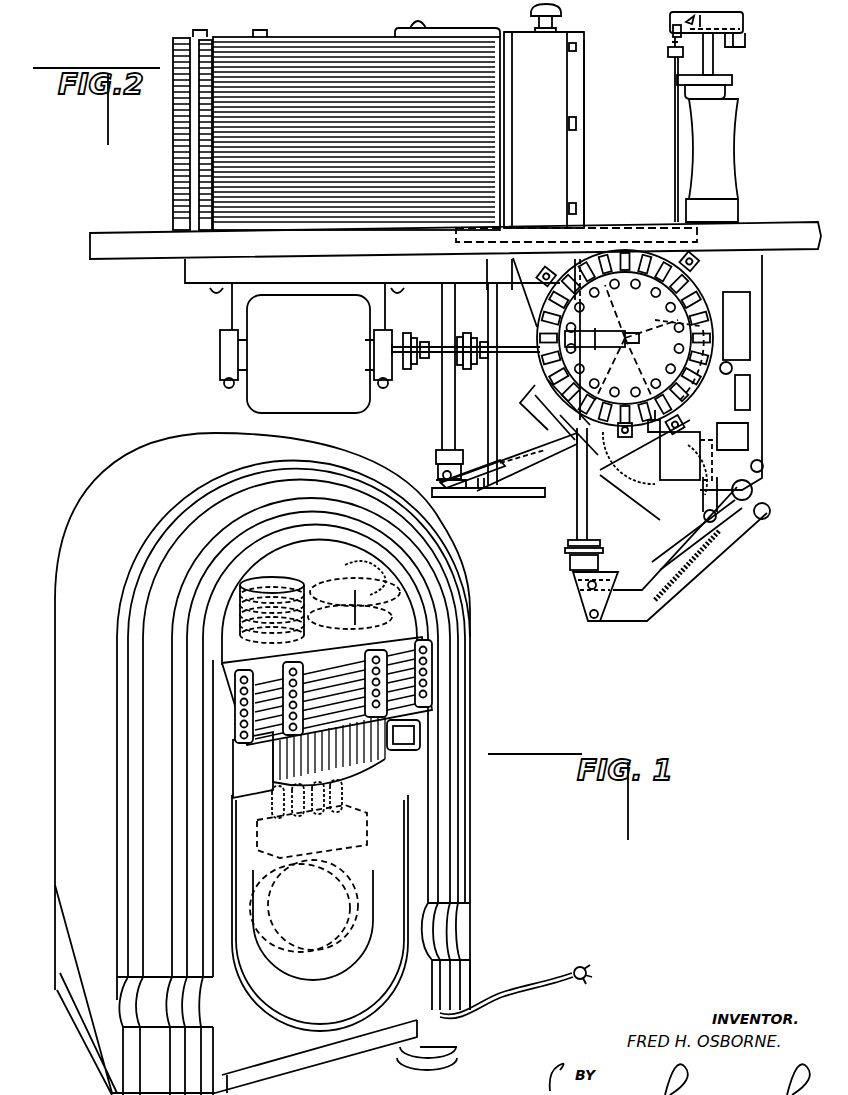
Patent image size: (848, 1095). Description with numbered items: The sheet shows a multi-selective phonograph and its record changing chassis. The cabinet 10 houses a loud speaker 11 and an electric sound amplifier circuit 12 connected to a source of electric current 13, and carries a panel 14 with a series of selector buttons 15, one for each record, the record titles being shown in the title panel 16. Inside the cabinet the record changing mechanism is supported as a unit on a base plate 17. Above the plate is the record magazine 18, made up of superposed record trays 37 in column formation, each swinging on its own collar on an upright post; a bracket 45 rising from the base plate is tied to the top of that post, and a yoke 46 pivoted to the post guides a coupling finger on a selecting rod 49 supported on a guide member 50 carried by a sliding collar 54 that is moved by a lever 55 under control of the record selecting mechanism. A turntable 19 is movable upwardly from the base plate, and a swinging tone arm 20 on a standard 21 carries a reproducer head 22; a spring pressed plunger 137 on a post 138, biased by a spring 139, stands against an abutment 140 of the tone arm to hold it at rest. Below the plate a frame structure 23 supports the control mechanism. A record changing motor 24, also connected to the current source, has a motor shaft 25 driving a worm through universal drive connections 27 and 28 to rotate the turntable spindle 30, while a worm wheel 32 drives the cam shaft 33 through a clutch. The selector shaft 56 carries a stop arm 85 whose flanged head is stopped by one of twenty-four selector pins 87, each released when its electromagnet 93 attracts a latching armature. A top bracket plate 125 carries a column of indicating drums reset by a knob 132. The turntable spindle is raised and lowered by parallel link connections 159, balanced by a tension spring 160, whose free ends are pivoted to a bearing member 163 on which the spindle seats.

In FIG. 1, the cabinet 10 is at (450, 560).
In FIG. 1, the loud speaker 11 is at (466, 852).
In FIG. 1, the electric sound amplifier circuit 12 is at (470, 740).
In FIG. 1, the source of electric current 13 is at (588, 968).
In FIG. 1, the panel 14 is at (385, 667).
In FIG. 1, the selector buttons 15 is at (432, 693).
In FIG. 1, the title panel 16 is at (347, 673).
In FIG. 2, the base plate 17 is at (112, 246).
In FIG. 2, the record magazine 18 is at (240, 34).
In FIG. 1, the record magazine 18 is at (262, 612).
In FIG. 2, the turntable 19 is at (621, 236).
In FIG. 2, the tone arm 20 is at (745, 30).
In FIG. 1, the tone arm 20 is at (359, 566).
In FIG. 2, the standard 21 is at (720, 143).
In FIG. 2, the reproducer head 22 is at (728, 20).
In FIG. 1, the reproducer head 22 is at (436, 540).
In FIG. 2, the frame structure 23 is at (757, 368).
In FIG. 2, the record changing motor 24 is at (306, 348).
In FIG. 2, the motor shaft 25 is at (437, 353).
In FIG. 2, the universal drive connection 27 is at (466, 332).
In FIG. 2, the universal drive connection 28 is at (411, 332).
In FIG. 2, the turntable spindle 30 is at (578, 505).
In FIG. 2, the worm wheel 32 is at (641, 480).
In FIG. 2, the cam shaft 33 is at (680, 445).
In FIG. 2, the record trays 37 is at (330, 47).
In FIG. 2, the bracket 45 is at (586, 143).
In FIG. 2, the yoke 46 is at (501, 34).
In FIG. 2, the selecting rod 49 is at (491, 368).
In FIG. 2, the guide member 50 is at (463, 462).
In FIG. 2, the sliding collar 54 is at (436, 466).
In FIG. 2, the lever 55 is at (514, 447).
In FIG. 2, the selector shaft 56 is at (625, 333).
In FIG. 2, the stop arm 85 is at (680, 280).
In FIG. 2, the selector pins 87 is at (712, 322).
In FIG. 2, the electromagnet 93 is at (700, 330).
In FIG. 2, the top bracket plate 125 is at (558, 30).
In FIG. 2, the resetting knob 132 is at (560, 16).
In FIG. 2, the spring pressed plunger 137 is at (673, 40).
In FIG. 2, the post 138 is at (675, 141).
In FIG. 2, the spring 139 is at (667, 49).
In FIG. 2, the abutment 140 is at (694, 18).
In FIG. 2, the parallel link connections 159 is at (725, 543).
In FIG. 2, the tension spring 160 is at (688, 574).
In FIG. 2, the bearing member 163 is at (586, 596).